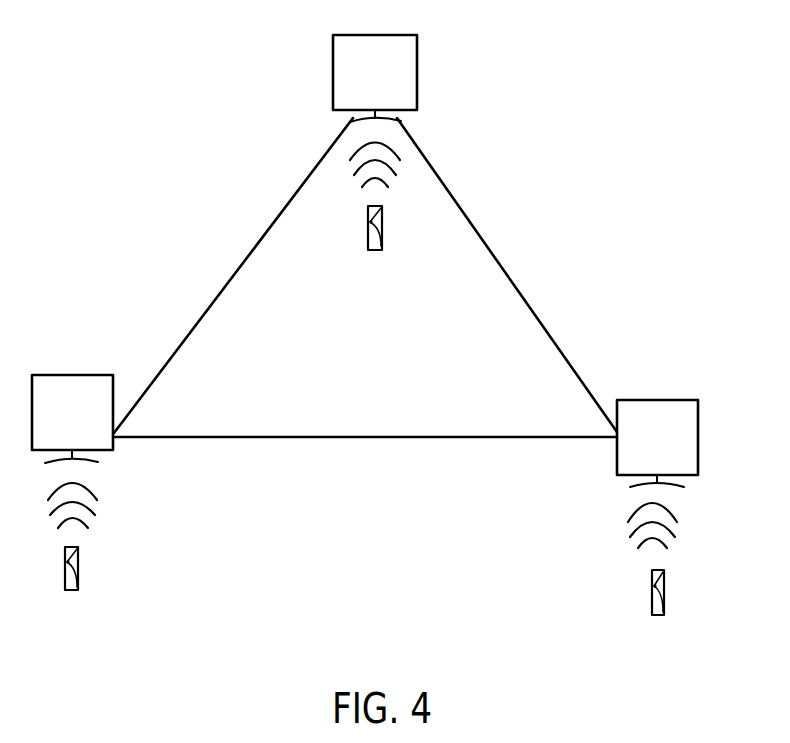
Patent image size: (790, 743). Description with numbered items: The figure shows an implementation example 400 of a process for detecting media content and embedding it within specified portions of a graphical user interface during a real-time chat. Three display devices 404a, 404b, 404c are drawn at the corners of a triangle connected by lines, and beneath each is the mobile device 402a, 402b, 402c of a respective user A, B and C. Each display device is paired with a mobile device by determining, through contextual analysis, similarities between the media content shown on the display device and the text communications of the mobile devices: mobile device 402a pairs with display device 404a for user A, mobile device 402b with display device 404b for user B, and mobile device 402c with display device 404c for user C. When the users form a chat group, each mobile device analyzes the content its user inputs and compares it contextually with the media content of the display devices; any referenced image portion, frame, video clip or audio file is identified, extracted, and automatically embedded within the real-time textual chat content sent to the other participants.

The implementation example 400 is at (196, 164).
The mobile device 402a is at (78, 557).
The mobile device 402b is at (663, 590).
The mobile device 402c is at (382, 245).
The display device 404a is at (90, 374).
The display device 404b is at (677, 400).
The display device 404c is at (417, 78).